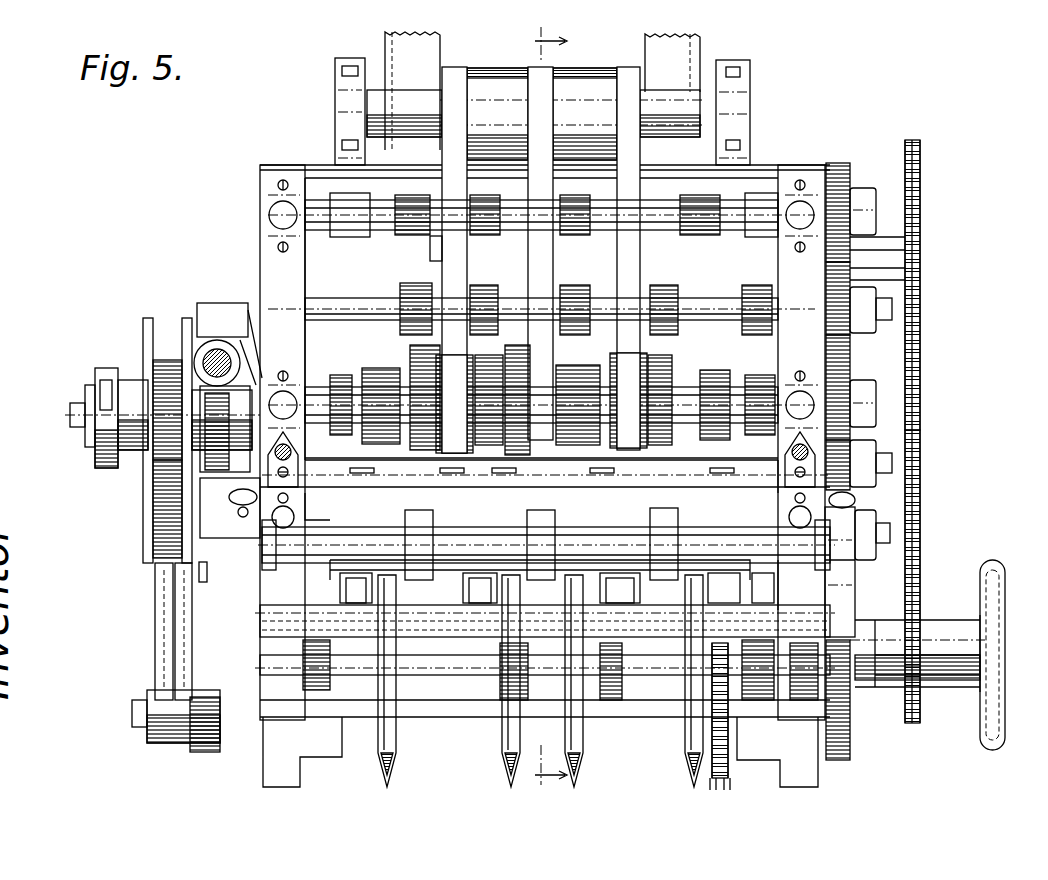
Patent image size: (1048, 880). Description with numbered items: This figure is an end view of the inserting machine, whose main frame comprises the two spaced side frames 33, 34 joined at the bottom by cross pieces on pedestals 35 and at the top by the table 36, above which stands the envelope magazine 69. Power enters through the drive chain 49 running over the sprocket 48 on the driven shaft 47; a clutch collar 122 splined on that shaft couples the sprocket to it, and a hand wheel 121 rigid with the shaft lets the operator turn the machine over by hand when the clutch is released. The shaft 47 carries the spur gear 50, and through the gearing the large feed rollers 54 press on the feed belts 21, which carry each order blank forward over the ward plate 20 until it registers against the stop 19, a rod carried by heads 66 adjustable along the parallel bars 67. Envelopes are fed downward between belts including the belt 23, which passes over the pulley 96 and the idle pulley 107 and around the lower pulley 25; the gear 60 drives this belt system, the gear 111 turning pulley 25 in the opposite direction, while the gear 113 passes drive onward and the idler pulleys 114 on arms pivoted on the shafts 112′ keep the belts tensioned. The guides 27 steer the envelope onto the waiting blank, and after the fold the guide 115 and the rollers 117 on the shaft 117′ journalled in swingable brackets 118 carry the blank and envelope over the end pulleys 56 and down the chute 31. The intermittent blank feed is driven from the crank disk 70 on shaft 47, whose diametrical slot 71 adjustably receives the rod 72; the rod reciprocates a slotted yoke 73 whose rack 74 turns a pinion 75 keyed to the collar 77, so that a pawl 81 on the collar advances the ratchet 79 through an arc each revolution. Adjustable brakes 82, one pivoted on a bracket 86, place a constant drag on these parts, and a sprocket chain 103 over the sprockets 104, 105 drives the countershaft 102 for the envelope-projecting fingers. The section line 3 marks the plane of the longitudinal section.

The section line 3- 3 is at (540, 406).
The stop 19 is at (352, 485).
The ward plate 20 is at (595, 466).
The feed belt 21 is at (608, 596).
The feed belt 23 is at (528, 272).
The pulley 25 is at (470, 362).
The guide 27 is at (508, 466).
The chute 31 is at (396, 752).
The side frame 33 is at (268, 263).
The side frame 34 is at (850, 367).
The pedestal 35 is at (265, 771).
The table 36 is at (318, 168).
The driven shaft 47 is at (365, 656).
The sprocket 48 is at (740, 690).
The drive chain 49 is at (725, 765).
The spur gear 50 is at (850, 752).
The feed roller 54 is at (668, 353).
The end pulley 56 is at (578, 590).
The gear 60 is at (864, 482).
The head 66 is at (293, 472).
The parallel bar 67 is at (300, 455).
The magazine 69 is at (388, 40).
The crank disk 70 is at (222, 735).
The diametrical slot 71 is at (200, 580).
The rod 72 is at (168, 625).
The slotted yoke 73 is at (146, 318).
The rack 74 is at (155, 543).
The pinion 75 is at (165, 422).
The collar 77 is at (133, 380).
The ratchet 79 is at (100, 368).
The pawl 81 is at (104, 395).
The brake 82 is at (220, 315).
The bracket 86 is at (250, 291).
The pulley 96 is at (464, 72).
The countershaft 102 is at (722, 262).
The sprocket chain 103 is at (921, 429).
The sprocket 104 is at (916, 594).
The sprocket 105 is at (935, 285).
The pulley 107 is at (432, 250).
The gear 111 is at (850, 436).
The shaft 112′ is at (362, 302).
The gear 113 is at (838, 163).
The idler pulley 114 is at (442, 290).
The guide 115 is at (448, 565).
The roller 117 is at (420, 520).
The shaft 117′ is at (590, 530).
The bracket 118 is at (850, 590).
The hand wheel 121 is at (995, 568).
The clutch collar 122 is at (628, 692).